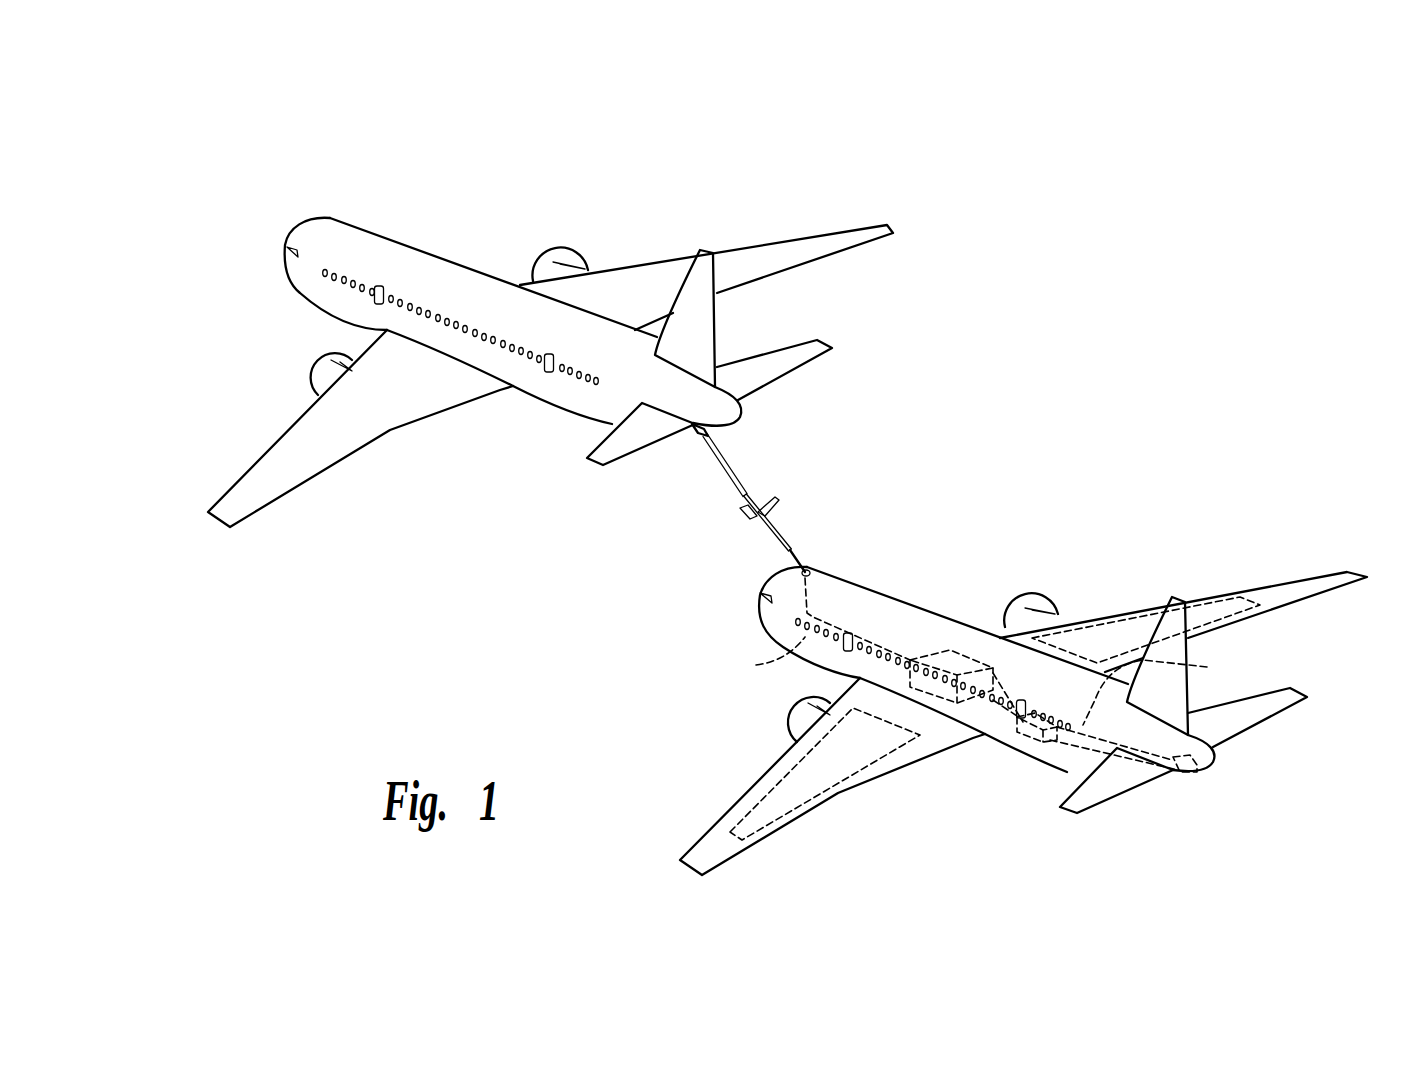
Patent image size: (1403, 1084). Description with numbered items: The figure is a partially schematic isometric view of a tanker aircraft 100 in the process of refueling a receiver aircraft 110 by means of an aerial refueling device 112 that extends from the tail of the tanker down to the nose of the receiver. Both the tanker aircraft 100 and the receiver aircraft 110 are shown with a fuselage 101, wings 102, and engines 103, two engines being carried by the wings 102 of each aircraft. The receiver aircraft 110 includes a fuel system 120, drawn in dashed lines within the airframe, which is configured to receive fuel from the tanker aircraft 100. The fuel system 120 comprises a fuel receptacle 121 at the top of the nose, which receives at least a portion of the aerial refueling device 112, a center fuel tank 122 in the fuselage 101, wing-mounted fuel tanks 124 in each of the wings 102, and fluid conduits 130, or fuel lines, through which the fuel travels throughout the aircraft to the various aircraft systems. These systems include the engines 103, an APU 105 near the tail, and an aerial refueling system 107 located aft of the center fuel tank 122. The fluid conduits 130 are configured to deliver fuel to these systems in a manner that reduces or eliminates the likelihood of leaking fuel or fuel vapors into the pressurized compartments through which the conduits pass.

The tanker aircraft 100 is at (417, 494).
The fuselage 101 is at (467, 275).
The wings 102 is at (242, 488).
The engines 103 is at (548, 258).
The APU 105 is at (1185, 775).
The aerial refueling system 107 is at (1023, 737).
The receiver aircraft 110 is at (708, 731).
The aerial refueling device 112 is at (722, 497).
The fuel system 120 is at (914, 643).
The fuel receptacle 121 is at (813, 566).
The center fuel tank 122 is at (962, 656).
The wing-mounted fuel tanks 124 is at (840, 797).
The fluid conduits 130 is at (977, 681).